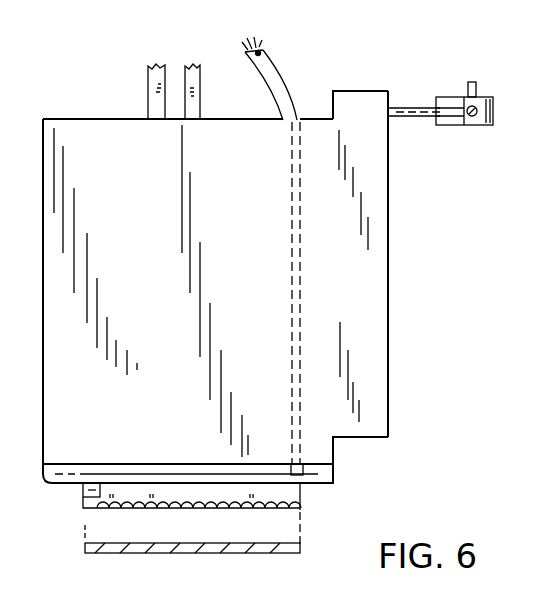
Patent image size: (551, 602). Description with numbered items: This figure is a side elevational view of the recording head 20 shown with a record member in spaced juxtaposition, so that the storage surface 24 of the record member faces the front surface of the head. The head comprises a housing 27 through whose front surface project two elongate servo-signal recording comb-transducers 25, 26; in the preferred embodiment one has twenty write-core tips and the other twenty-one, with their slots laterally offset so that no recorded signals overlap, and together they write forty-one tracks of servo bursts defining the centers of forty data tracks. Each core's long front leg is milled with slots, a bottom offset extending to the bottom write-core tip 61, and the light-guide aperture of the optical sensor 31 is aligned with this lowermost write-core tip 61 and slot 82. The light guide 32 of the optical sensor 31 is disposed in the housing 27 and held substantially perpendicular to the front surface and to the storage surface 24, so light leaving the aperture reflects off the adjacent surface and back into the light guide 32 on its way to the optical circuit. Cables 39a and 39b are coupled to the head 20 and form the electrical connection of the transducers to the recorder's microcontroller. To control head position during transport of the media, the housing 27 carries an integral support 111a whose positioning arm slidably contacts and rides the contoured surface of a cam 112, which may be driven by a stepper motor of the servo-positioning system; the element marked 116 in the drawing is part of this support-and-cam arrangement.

The recording head 20 is at (407, 363).
The storage surface 24 is at (228, 552).
The servo-signal recording comb-transducer 25 is at (83, 490).
The servo-signal recording comb-transducer 26 is at (88, 505).
The housing 27 is at (400, 296).
The optical sensor 31 is at (298, 285).
The light guide 32 is at (275, 78).
The cable 39a is at (153, 98).
The cable 39b is at (232, 100).
The bottom write-core tip 61 is at (297, 505).
The slot 82 is at (297, 512).
The integral support 111a is at (362, 100).
The cam 112 is at (486, 125).
The rod 116 is at (410, 116).